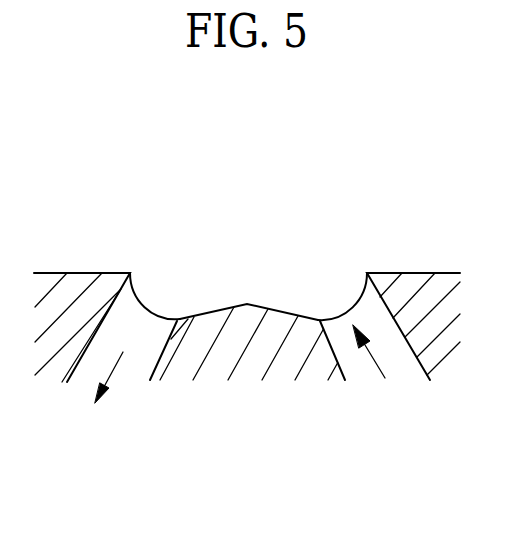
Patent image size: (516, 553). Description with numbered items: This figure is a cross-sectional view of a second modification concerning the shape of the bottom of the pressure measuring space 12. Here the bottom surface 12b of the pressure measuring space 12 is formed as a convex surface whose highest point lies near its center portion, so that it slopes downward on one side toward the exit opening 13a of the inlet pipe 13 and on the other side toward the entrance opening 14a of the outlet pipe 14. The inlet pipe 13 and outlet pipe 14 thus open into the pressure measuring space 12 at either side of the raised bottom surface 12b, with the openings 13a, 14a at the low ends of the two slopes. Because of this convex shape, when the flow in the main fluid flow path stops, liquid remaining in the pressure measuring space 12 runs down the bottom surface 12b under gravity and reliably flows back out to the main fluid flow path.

The pressure measuring space 12 is at (248, 235).
The bottom surface 12b is at (247, 302).
The inlet pipe 13 is at (362, 370).
The exit opening 13a is at (347, 303).
The outlet pipe 14 is at (135, 370).
The entrance opening 14a is at (148, 302).